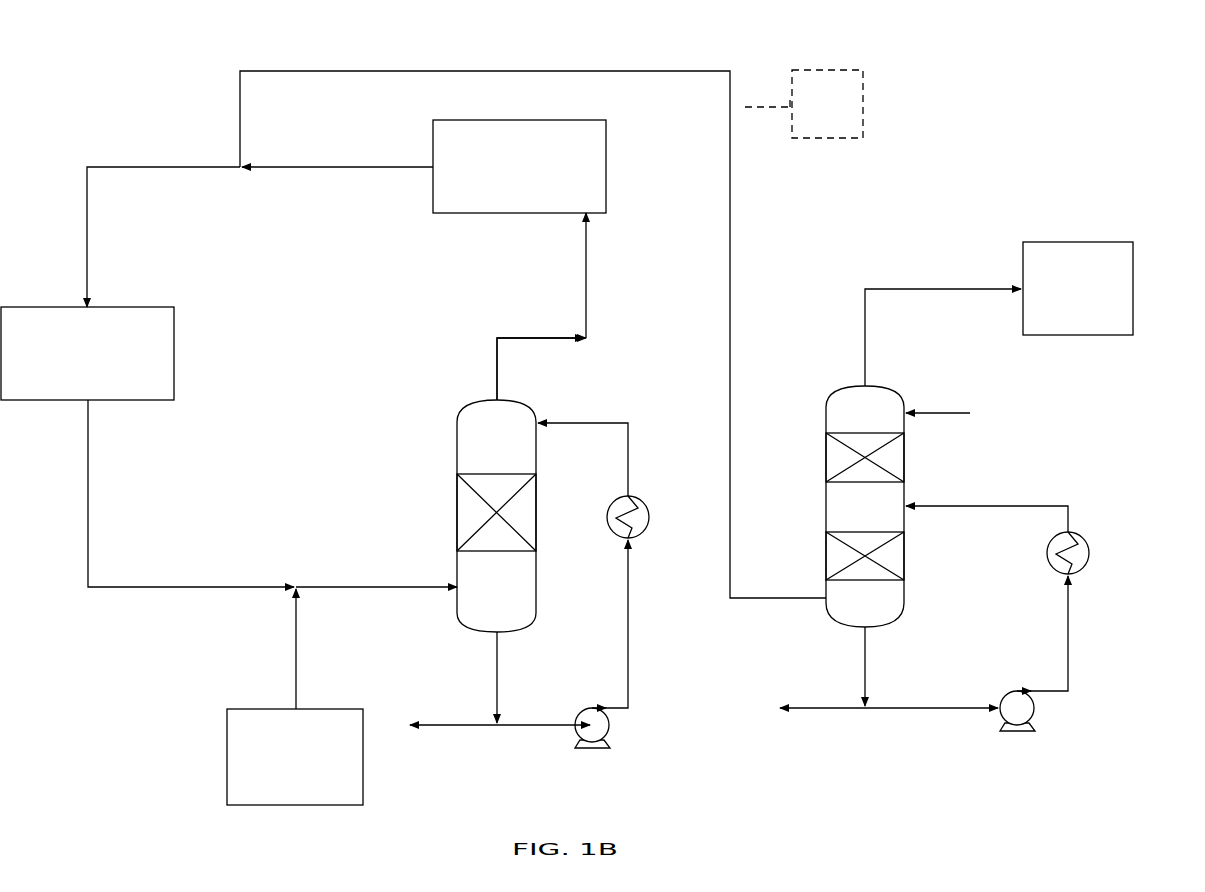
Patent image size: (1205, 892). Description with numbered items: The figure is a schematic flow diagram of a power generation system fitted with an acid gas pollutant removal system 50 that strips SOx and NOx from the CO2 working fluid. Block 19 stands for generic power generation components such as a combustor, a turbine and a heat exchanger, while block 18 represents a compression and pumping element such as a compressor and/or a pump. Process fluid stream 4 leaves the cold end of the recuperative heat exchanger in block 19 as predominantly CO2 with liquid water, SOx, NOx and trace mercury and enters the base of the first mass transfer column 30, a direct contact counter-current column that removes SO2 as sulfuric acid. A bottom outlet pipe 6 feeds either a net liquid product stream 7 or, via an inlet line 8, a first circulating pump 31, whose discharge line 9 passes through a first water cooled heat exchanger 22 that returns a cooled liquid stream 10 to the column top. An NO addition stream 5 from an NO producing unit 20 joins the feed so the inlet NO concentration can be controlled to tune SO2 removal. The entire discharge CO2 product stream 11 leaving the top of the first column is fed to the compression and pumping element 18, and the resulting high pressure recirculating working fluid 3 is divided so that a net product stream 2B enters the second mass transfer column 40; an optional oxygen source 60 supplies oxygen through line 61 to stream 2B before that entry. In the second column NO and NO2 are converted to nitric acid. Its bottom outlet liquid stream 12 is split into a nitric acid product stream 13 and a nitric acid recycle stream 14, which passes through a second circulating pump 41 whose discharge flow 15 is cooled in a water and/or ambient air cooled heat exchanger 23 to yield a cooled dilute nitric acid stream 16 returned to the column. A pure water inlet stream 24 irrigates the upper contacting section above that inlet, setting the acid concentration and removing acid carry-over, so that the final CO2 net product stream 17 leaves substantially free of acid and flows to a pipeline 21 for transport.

The net product stream 2B is at (730, 247).
The high pressure recirculating working fluid 3 is at (277, 167).
The process fluid stream 4 is at (88, 510).
The NO addition stream 5 is at (295, 648).
The bottom outlet pipe 6 is at (498, 663).
The net liquid product stream 7 is at (465, 728).
The inlet line 8 is at (522, 728).
The first circulating pump discharge line 9 is at (630, 640).
The cooled liquid stream 10 is at (575, 422).
The discharge CO2 product stream 11 is at (512, 337).
The bottom outlet liquid stream 12 is at (867, 675).
The nitric acid product stream 13 is at (845, 712).
The nitric acid recycle stream 14 is at (937, 712).
The discharge flow 15 is at (1070, 628).
The cooled inlet dilute nitric acid stream 16 is at (975, 505).
The final CO2 net product stream 17 is at (936, 288).
The compression and pumping element 18 is at (561, 117).
The power generation system block 19 is at (135, 307).
The NO producing unit 20 is at (275, 805).
The pipeline 21 is at (1106, 242).
The first water cooled heat exchanger 22 is at (650, 515).
The water and/or ambient air cooled heat exchanger 23 is at (1090, 549).
The pure water inlet stream 24 is at (958, 412).
The first mass transfer column 30 is at (457, 458).
The first circulating pump 31 is at (610, 725).
The second mass transfer column 40 is at (826, 505).
The second circulating pump 41 is at (1033, 712).
The acid gas pollutant removal system 50 is at (970, 97).
The oxygen source 60 is at (830, 70).
The oxygen supply line 61 is at (768, 97).